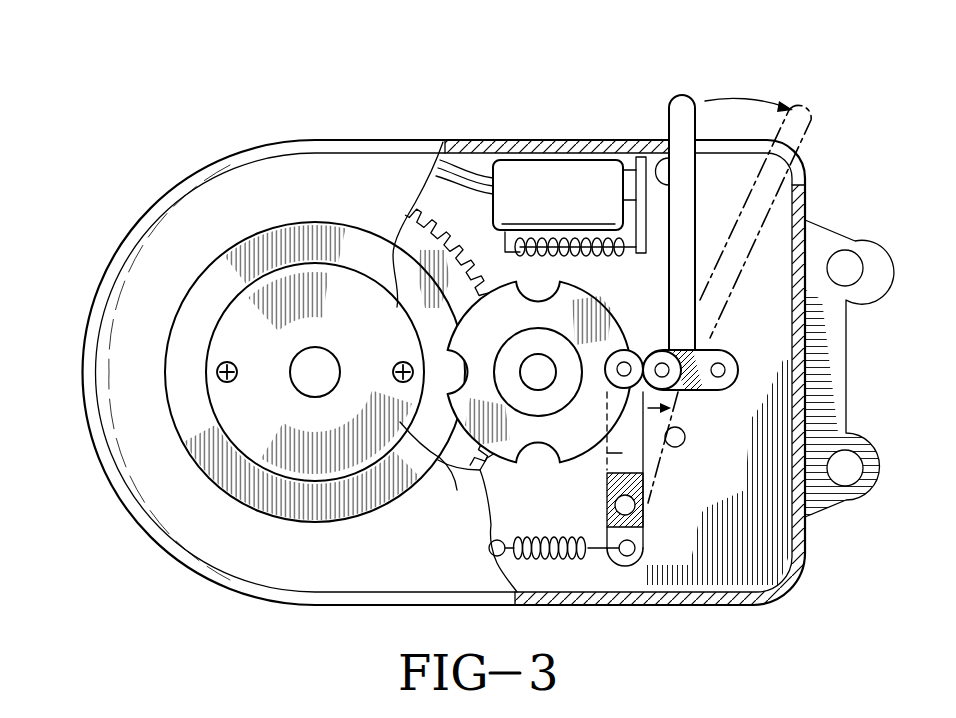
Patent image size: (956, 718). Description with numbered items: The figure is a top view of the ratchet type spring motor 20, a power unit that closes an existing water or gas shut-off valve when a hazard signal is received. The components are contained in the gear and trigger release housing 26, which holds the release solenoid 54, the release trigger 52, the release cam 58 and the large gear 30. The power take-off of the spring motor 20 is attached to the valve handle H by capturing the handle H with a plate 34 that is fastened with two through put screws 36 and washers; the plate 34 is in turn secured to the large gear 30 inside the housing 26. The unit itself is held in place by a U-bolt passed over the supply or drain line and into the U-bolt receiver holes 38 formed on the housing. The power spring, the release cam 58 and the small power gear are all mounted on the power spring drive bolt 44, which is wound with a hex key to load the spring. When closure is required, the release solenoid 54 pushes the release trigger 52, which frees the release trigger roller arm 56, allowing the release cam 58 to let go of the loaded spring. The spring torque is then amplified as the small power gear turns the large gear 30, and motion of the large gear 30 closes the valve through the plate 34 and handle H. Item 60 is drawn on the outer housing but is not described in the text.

The ratchet type spring motor 20 is at (136, 146).
The gear and trigger release housing 26 is at (476, 150).
The large gear 30 is at (413, 230).
The plate 34 is at (232, 310).
The through put screws 36 is at (222, 381).
The U-bolt receiver holes 38 is at (845, 266).
The power spring drive bolt 44 is at (532, 368).
The release trigger 52 is at (680, 100).
The release solenoid 54 is at (546, 185).
The release trigger roller arm 56 is at (615, 453).
The release cam 58 is at (568, 302).
The cover 60 is at (175, 515).
The handle H is at (303, 230).